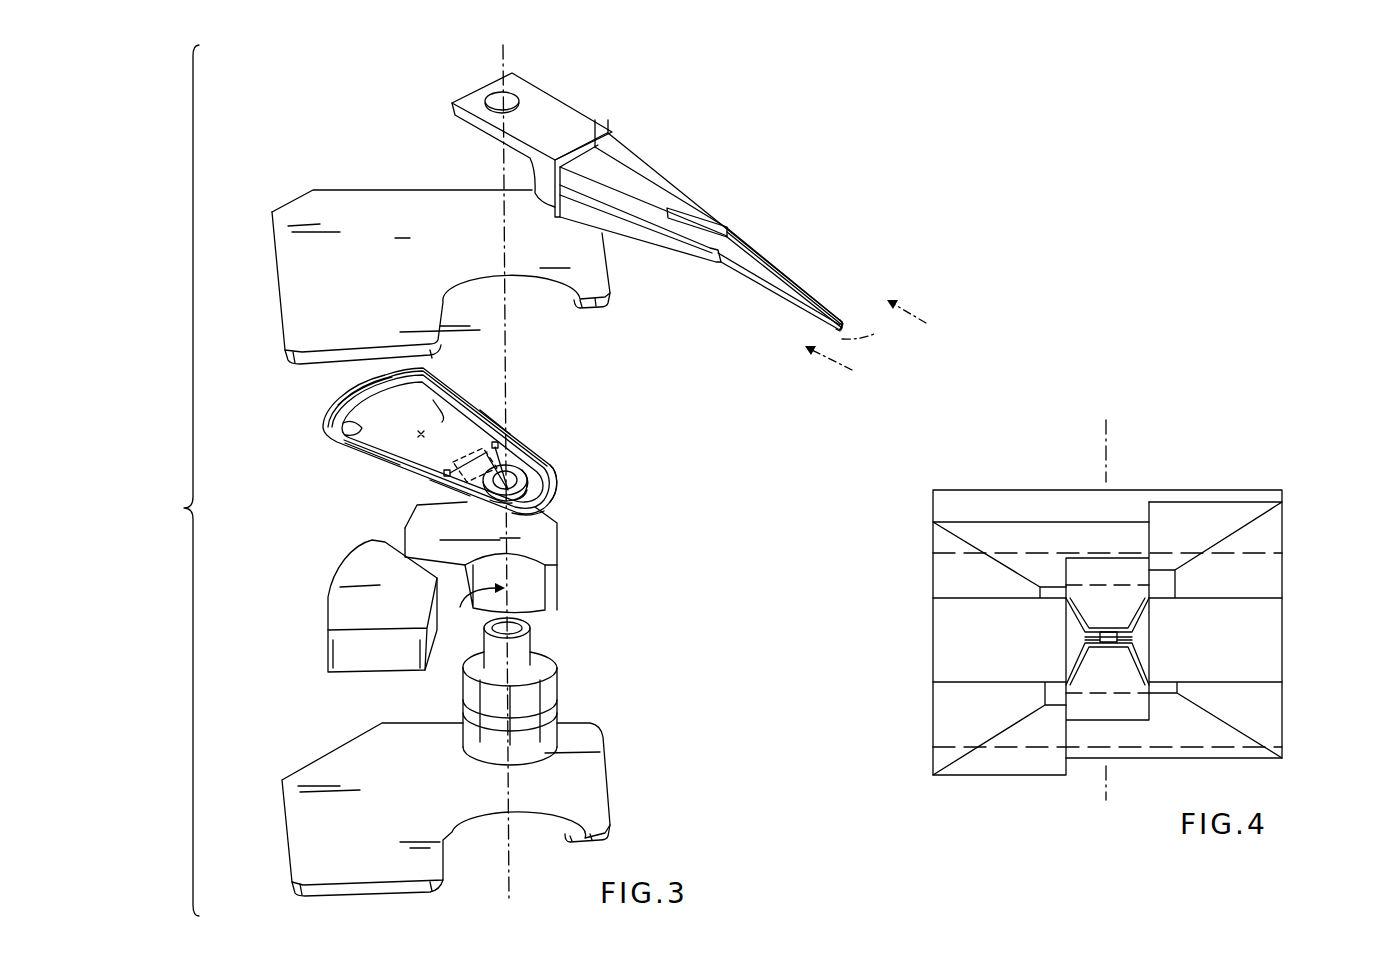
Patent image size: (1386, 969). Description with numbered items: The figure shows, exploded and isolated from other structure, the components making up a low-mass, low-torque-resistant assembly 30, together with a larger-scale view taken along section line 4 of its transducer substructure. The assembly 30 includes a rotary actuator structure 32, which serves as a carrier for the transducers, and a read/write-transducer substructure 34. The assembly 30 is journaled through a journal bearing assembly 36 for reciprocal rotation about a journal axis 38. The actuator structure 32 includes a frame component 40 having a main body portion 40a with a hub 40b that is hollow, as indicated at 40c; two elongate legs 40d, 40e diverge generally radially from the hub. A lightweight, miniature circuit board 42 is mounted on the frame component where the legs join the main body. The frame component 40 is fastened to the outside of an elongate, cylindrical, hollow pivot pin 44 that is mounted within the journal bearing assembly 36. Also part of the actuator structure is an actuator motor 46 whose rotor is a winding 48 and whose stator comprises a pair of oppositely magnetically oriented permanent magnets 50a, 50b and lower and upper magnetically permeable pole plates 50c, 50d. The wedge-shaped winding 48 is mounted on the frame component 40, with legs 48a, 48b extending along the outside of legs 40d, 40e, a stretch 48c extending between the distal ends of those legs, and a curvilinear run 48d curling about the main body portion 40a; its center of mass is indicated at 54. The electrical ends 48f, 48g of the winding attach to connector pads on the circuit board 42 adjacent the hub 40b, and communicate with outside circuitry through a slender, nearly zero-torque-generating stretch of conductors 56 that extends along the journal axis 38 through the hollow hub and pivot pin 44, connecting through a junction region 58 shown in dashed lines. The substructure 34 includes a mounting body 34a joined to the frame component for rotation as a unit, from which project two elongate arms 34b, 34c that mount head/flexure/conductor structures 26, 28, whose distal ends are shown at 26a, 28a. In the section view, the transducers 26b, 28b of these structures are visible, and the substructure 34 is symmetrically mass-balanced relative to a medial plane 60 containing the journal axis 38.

In FIG. 3, the section line 4— 4 is at (857, 335).
In FIG. 3, the head/flexure/conductor structure 26 is at (816, 277).
In FIG. 4, the head/flexure/conductor structure 26 is at (1110, 620).
In FIG. 3, the distal end of structure 26 26a is at (845, 324).
In FIG. 4, the transducer 26b is at (1117, 634).
In FIG. 3, the head/flexure/conductor structure 28 is at (778, 301).
In FIG. 4, the head/flexure/conductor structure 28 is at (1114, 661).
In FIG. 3, the distal end of structure 28 28a is at (806, 335).
In FIG. 4, the transducer 28b is at (1115, 642).
In FIG. 3, the assembly 30 is at (181, 511).
In FIG. 3, the rotary actuator structure 32 is at (288, 400).
In FIG. 3, the read/write-transducer substructure 34 is at (679, 211).
In FIG. 4, the read/write-transducer substructure 34 is at (1148, 593).
In FIG. 3, the mounting body 34a is at (592, 125).
In FIG. 4, the mounting body 34a is at (1273, 565).
In FIG. 3, the arm 34b is at (650, 176).
In FIG. 4, the arm 34b is at (1273, 710).
In FIG. 3, the arm 34c is at (647, 240).
In FIG. 3, the journal bearing assembly 36 is at (580, 692).
In FIG. 3, the journal axis 38 is at (504, 64).
In FIG. 3, the frame component 40 is at (456, 450).
In FIG. 3, the main body portion 40a is at (540, 487).
In FIG. 3, the hub 40b is at (537, 502).
In FIG. 3, the hollow of the hub 40c is at (537, 507).
In FIG. 3, the leg 40d is at (340, 432).
In FIG. 3, the leg 40e is at (443, 412).
In FIG. 3, the circuit board 42 is at (499, 445).
In FIG. 3, the pivot pin 44 is at (515, 652).
In FIG. 3, the actuator motor 46 is at (405, 143).
In FIG. 3, the winding 48 is at (452, 455).
In FIG. 3, the winding leg 48a is at (352, 455).
In FIG. 3, the winding leg 48b is at (483, 432).
In FIG. 3, the stretch 48c is at (358, 386).
In FIG. 3, the curvilinear run 48d is at (537, 516).
In FIG. 3, the electrical end of winding 48f is at (440, 479).
In FIG. 3, the electrical end of winding 48g is at (543, 468).
In FIG. 3, the permanent magnet 50a is at (335, 606).
In FIG. 3, the permanent magnet 50b is at (545, 597).
In FIG. 3, the lower pole plate 50c is at (350, 750).
In FIG. 3, the upper pole plate 50d is at (298, 278).
In FIG. 3, the center of mass of the winding 54 is at (421, 434).
In FIG. 3, the conductor stretch 56 is at (477, 609).
In FIG. 3, the junction region 58 is at (466, 458).
In FIG. 4, the medial plane 60 is at (1107, 442).